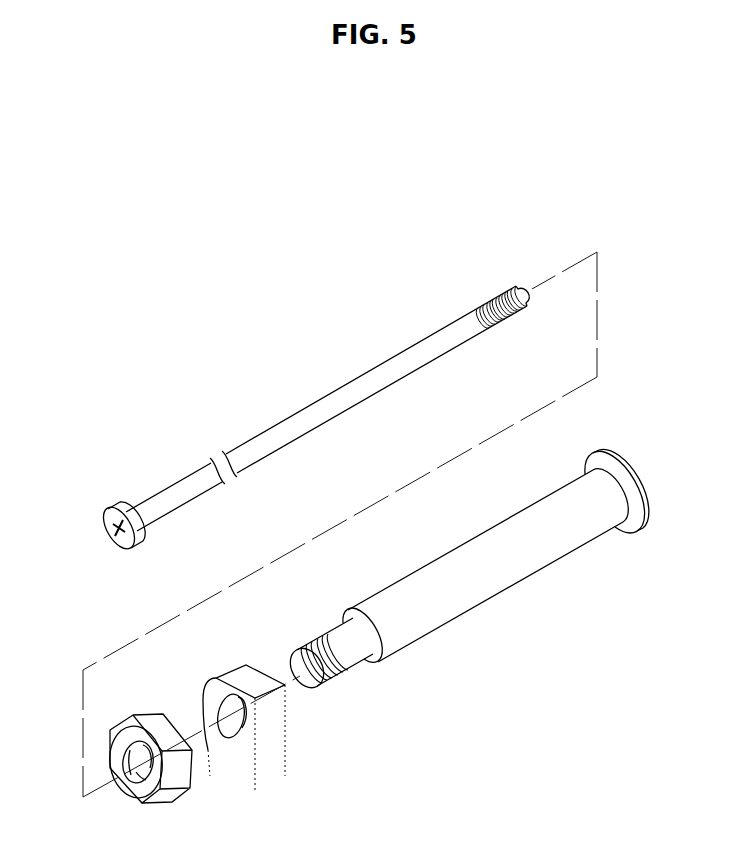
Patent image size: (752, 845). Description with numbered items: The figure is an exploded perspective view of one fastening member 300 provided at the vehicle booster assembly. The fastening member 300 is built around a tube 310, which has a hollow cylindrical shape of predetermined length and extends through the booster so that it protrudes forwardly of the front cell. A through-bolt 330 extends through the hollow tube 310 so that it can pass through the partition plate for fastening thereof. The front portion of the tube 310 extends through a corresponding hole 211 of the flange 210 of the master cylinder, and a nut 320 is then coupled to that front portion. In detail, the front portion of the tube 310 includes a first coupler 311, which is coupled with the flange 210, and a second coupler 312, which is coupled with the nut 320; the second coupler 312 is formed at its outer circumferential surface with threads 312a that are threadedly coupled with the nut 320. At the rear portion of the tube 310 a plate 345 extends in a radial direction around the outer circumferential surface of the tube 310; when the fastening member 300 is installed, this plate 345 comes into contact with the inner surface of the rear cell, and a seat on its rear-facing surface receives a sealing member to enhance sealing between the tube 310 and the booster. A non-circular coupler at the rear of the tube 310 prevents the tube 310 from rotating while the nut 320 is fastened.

The fastening member 300 is at (340, 252).
The through-bolt 330 is at (172, 486).
The tube 310 is at (521, 571).
The first coupler 311 is at (362, 664).
The second coupler 312 is at (330, 686).
The threads 312a is at (320, 643).
The plate 345 is at (622, 452).
The flange 210 is at (236, 672).
The hole 211 is at (229, 714).
The nut 320 is at (176, 788).